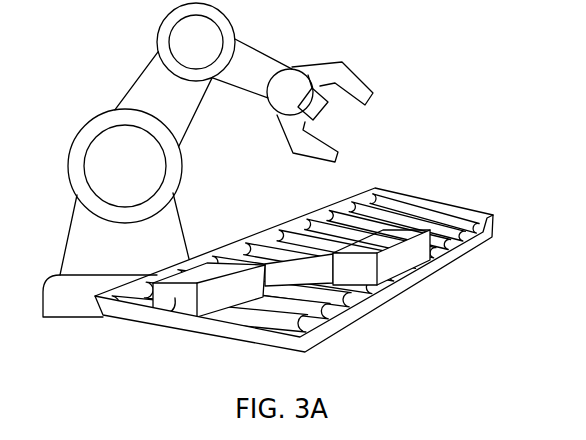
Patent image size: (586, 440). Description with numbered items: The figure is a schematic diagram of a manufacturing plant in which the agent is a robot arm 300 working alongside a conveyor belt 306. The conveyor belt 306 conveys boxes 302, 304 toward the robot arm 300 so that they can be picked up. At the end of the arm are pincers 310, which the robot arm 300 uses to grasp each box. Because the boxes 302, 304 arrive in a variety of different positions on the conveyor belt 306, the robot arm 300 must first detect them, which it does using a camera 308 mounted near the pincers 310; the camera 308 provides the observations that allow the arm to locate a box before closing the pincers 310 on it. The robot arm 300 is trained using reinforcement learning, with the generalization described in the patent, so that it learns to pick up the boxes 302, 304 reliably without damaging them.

The robot arm 300 is at (155, 98).
The box 302 is at (395, 263).
The box 304 is at (148, 322).
The conveyor belt 306 is at (473, 232).
The camera 308 is at (318, 113).
The pincers 310 is at (355, 78).